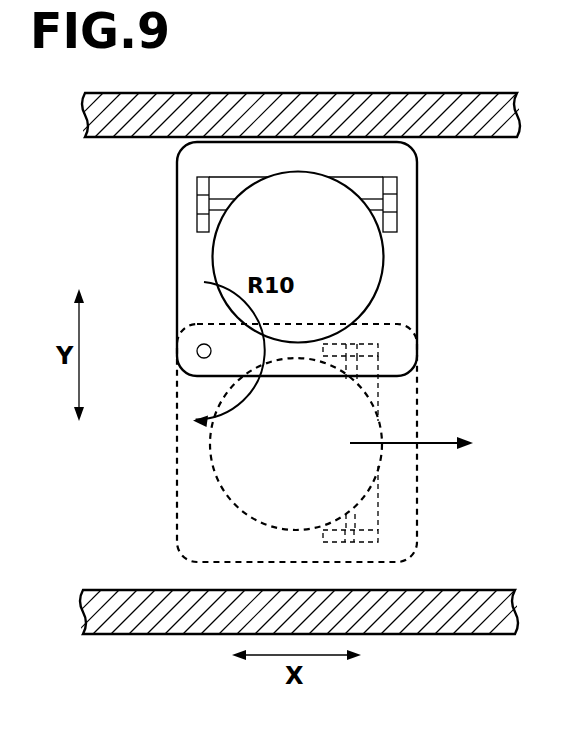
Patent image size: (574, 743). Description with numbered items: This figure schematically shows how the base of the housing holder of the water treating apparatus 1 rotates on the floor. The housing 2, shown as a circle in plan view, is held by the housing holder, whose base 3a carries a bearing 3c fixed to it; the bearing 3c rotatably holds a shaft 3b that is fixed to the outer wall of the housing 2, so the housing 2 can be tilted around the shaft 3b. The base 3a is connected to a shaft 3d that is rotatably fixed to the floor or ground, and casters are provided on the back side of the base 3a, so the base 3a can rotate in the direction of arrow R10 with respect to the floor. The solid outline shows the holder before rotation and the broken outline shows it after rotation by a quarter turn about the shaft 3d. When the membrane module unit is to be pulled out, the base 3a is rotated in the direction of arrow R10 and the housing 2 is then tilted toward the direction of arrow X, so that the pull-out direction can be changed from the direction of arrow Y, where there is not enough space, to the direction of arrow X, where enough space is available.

The water treating apparatus 1 is at (452, 179).
The housing 2 is at (372, 257).
The base 3a is at (193, 257).
The shaft 3b is at (215, 205).
The bearing 3c is at (200, 188).
The shaft 3d is at (196, 351).